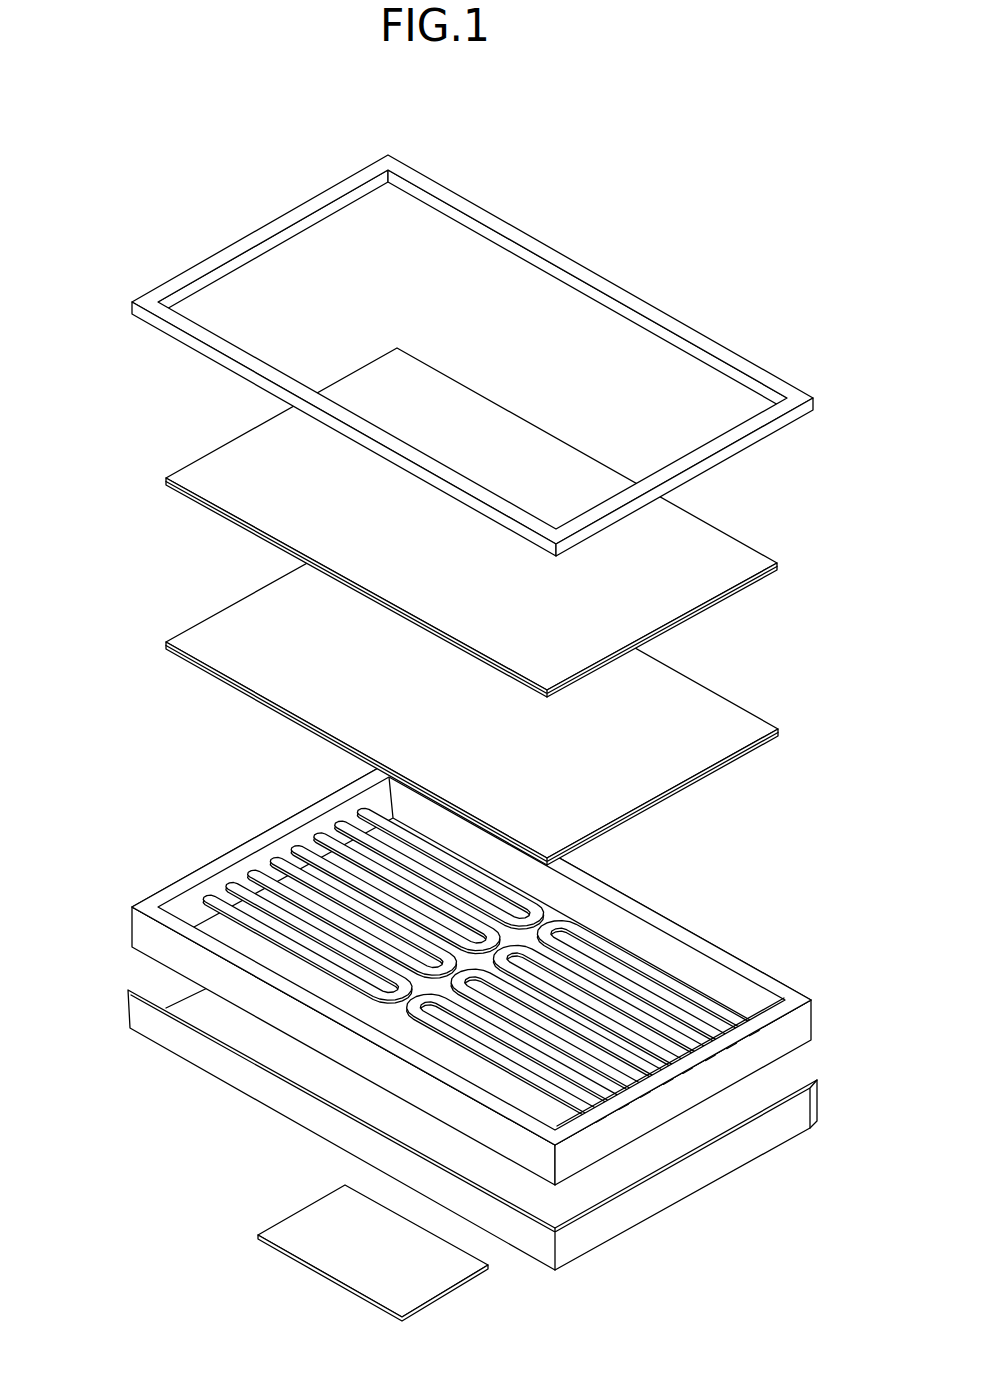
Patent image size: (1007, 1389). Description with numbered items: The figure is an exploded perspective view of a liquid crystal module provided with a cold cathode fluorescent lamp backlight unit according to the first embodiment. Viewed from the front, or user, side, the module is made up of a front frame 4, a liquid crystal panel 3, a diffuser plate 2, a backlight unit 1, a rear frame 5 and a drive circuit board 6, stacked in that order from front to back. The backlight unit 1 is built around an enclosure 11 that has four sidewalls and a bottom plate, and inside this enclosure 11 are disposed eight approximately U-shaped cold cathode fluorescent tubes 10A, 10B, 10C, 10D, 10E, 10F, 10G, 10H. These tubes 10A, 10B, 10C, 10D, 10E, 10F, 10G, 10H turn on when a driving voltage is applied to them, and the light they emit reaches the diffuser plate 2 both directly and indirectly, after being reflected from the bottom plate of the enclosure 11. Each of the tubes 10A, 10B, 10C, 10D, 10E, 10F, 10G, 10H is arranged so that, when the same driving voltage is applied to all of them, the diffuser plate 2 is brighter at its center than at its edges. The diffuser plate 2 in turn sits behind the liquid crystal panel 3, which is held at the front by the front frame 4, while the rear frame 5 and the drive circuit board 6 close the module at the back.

The backlight unit 1 is at (483, 1008).
The diffuser plate 2 is at (718, 705).
The liquid crystal panel 3 is at (718, 550).
The front frame 4 is at (795, 398).
The rear frame 5 is at (795, 1083).
The drive circuit board 6 is at (445, 1282).
The enclosure 11 is at (143, 930).
The cold cathode fluorescent tube 10A is at (348, 800).
The cold cathode fluorescent tube 10B is at (307, 821).
The cold cathode fluorescent tube 10C is at (267, 846).
The cold cathode fluorescent tube 10D is at (228, 873).
The cold cathode fluorescent tube 10E is at (715, 1046).
The cold cathode fluorescent tube 10F is at (670, 1070).
The cold cathode fluorescent tube 10G is at (634, 1100).
The cold cathode fluorescent tube 10H is at (594, 1128).